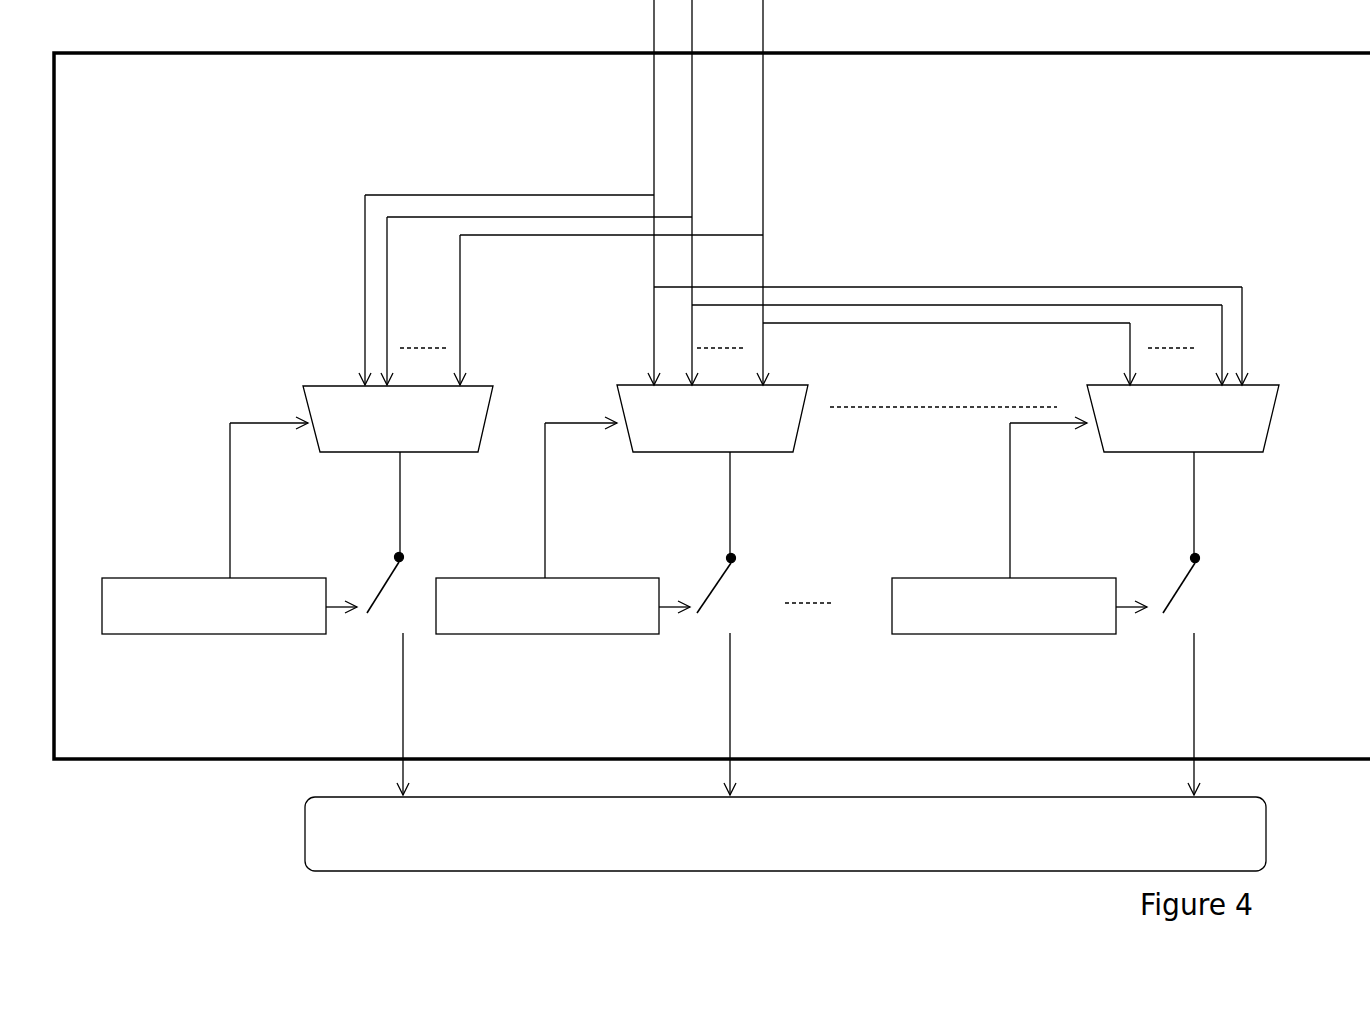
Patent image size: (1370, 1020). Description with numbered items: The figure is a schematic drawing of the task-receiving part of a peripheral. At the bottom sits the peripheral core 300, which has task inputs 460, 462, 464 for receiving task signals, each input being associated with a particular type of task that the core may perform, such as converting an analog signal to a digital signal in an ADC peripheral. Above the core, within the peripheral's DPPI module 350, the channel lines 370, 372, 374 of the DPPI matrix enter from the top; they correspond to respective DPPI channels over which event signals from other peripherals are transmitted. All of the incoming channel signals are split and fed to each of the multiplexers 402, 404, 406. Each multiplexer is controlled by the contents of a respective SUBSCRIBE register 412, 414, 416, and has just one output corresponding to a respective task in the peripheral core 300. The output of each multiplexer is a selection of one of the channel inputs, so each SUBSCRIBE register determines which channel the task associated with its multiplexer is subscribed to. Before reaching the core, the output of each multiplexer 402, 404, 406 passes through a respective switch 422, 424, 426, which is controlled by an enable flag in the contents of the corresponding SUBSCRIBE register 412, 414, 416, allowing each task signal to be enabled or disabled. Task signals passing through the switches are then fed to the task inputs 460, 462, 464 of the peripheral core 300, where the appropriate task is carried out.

The peripheral core 300 is at (317, 825).
The DPPI module 350 is at (1106, 66).
The channel line 370 is at (654, 18).
The channel line 372 is at (692, 68).
The channel line 374 is at (763, 97).
The multiplexer 402 is at (318, 388).
The multiplexer 404 is at (636, 390).
The multiplexer 406 is at (1113, 394).
The SUBSCRIBE register 412 is at (207, 580).
The SUBSCRIBE register 414 is at (491, 580).
The SUBSCRIBE register 416 is at (931, 580).
The switch 422 is at (365, 572).
The switch 424 is at (710, 572).
The switch 426 is at (1168, 580).
The task input 460 is at (400, 773).
The task input 462 is at (728, 777).
The task input 464 is at (1193, 773).